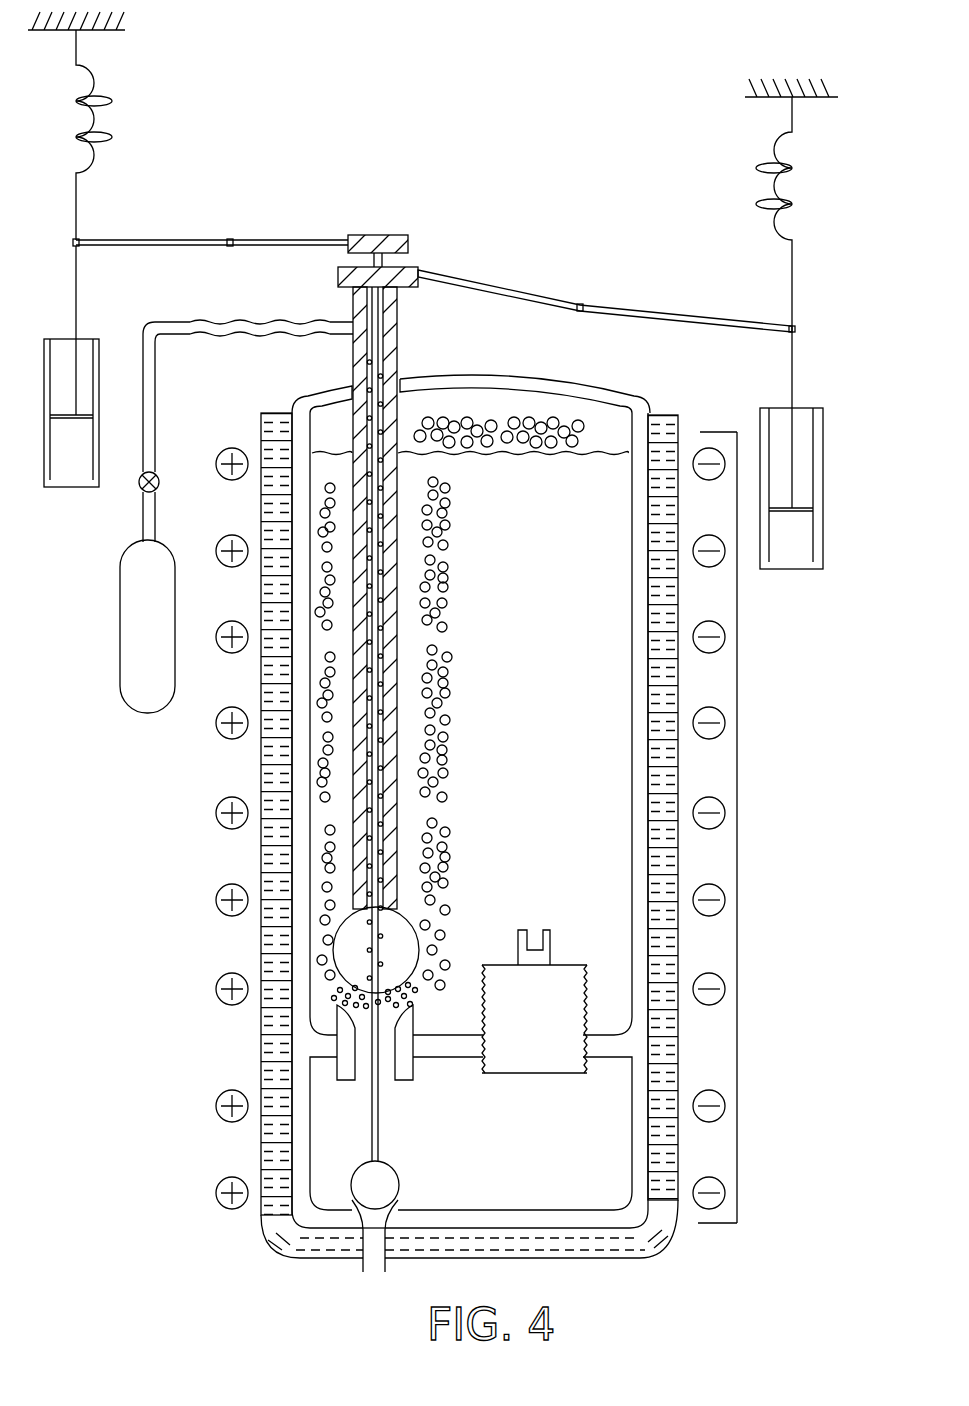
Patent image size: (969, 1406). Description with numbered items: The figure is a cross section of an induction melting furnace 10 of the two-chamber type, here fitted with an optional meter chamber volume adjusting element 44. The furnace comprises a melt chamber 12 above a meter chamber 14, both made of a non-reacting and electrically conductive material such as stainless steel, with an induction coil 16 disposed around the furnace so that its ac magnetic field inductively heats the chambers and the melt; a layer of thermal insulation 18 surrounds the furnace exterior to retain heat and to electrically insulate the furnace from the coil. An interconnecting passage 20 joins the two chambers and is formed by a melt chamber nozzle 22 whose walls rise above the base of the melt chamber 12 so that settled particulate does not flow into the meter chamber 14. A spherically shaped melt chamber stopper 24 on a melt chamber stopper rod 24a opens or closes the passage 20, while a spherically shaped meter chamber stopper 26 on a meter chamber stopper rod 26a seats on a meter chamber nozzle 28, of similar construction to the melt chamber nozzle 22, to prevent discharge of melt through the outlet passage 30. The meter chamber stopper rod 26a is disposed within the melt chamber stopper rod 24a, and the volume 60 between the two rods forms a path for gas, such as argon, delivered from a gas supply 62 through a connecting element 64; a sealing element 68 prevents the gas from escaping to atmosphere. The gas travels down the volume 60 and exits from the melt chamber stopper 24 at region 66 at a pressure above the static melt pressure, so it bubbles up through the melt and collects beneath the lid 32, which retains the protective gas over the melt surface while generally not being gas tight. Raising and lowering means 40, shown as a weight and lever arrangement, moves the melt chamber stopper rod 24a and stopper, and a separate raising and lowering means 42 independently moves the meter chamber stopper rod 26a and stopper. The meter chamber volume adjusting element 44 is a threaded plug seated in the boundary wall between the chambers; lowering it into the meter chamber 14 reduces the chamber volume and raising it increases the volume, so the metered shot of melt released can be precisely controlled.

The induction melting furnace 10 is at (680, 374).
The melt chamber 12 is at (566, 815).
The meter chamber 14 is at (550, 1142).
The induction coil 16 is at (737, 826).
The layer of thermal insulation 18 is at (653, 1237).
The interconnecting passage 20 is at (386, 1062).
The melt chamber nozzle 22 is at (407, 1032).
The melt chamber stopper 24 is at (398, 952).
The melt chamber stopper rod 24a is at (387, 825).
The meter chamber stopper 26 is at (386, 1182).
The meter chamber stopper rod 26a is at (373, 1158).
The meter chamber nozzle 28 is at (355, 1218).
The outlet passage 30 is at (375, 1243).
The lid 32 is at (481, 385).
The raising and lowering means 40 is at (800, 298).
The raising and lowering means 42 is at (113, 183).
The meter chamber volume adjusting element 44 is at (553, 1035).
The volume 60 is at (378, 697).
The gas supply 62 is at (128, 606).
The connecting element 64 is at (263, 322).
The region 66 is at (370, 992).
The sealing element 68 is at (386, 263).